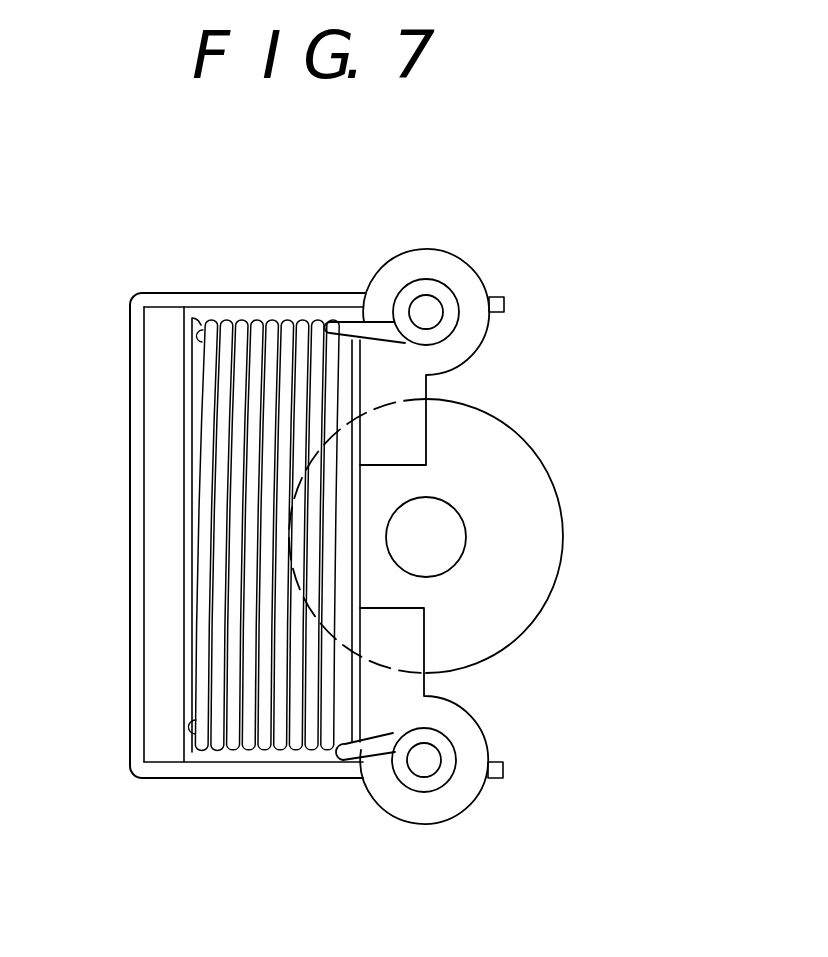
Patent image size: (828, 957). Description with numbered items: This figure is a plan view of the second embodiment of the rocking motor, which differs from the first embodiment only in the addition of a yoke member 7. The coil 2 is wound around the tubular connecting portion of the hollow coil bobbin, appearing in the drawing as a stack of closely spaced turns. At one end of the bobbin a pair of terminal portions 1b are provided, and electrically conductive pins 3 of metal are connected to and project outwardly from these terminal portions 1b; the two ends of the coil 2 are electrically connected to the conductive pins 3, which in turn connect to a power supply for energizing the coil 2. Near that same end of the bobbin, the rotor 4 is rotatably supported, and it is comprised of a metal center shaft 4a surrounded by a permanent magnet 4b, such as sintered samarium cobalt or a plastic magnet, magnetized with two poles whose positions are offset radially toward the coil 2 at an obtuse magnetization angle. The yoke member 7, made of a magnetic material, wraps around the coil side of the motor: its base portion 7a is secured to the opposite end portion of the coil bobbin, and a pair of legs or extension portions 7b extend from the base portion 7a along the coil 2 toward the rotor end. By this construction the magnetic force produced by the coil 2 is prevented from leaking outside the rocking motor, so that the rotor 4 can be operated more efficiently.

The terminal portions 1b is at (458, 338).
The coil 2 is at (293, 337).
The conductive pins 3 is at (428, 312).
The rotor 4 is at (494, 536).
The center shaft 4a is at (443, 518).
The permanent magnet 4b is at (520, 580).
The yoke member 7 is at (122, 773).
The base portion 7a is at (138, 362).
The extension portions 7b is at (218, 298).